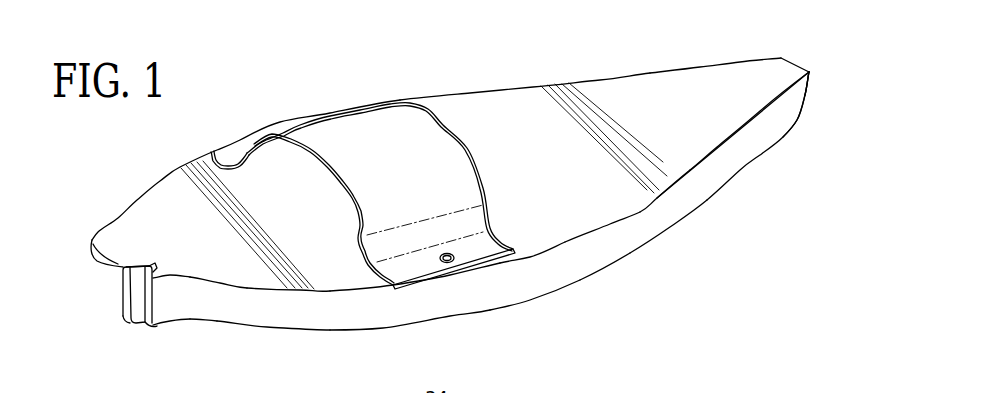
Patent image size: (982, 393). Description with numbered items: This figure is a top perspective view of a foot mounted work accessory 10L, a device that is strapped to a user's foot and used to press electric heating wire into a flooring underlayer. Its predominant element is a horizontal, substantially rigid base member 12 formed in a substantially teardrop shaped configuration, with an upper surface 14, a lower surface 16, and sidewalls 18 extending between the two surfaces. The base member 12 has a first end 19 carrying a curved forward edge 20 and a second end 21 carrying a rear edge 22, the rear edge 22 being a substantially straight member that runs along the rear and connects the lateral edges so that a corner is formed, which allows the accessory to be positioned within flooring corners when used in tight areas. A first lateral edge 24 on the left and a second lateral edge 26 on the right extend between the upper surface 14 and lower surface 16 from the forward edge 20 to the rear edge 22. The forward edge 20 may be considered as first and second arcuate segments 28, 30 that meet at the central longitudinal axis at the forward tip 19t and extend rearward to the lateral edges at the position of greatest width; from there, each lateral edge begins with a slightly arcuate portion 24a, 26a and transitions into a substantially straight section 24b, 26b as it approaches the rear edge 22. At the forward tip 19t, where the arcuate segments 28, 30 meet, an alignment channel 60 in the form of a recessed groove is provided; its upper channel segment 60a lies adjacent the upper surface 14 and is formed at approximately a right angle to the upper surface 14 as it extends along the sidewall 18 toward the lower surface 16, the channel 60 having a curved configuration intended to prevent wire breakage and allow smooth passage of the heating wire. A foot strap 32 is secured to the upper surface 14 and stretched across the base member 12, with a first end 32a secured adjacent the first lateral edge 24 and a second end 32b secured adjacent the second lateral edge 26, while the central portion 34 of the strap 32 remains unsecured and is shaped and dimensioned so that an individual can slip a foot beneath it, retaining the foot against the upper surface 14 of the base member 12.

The foot mounted work accessory 10L is at (704, 238).
The base member 12 is at (588, 260).
The upper surface 14 is at (567, 168).
The lower surface 16 is at (380, 329).
The sidewalls 18 is at (539, 276).
The first end 19 is at (218, 303).
The forward tip 19t is at (167, 327).
The forward edge 20 is at (272, 312).
The second end 21 is at (784, 58).
The rear edge 22 is at (809, 72).
The first lateral edge 24 is at (598, 78).
The slightly arcuate portion 24a is at (397, 100).
The substantially straight section 24b is at (700, 65).
The second lateral edge 26 is at (728, 157).
The slightly arcuate portion 26a is at (643, 228).
The substantially straight section 26b is at (777, 117).
The first arcuate segment 28 is at (108, 267).
The second arcuate segment 30 is at (248, 294).
The foot strap 32 is at (313, 138).
The first end of the strap 32a is at (230, 152).
The second end of the strap 32b is at (474, 249).
The central portion of the strap 34 is at (362, 146).
The alignment channel 60 is at (113, 310).
The upper channel segment 60a is at (148, 263).